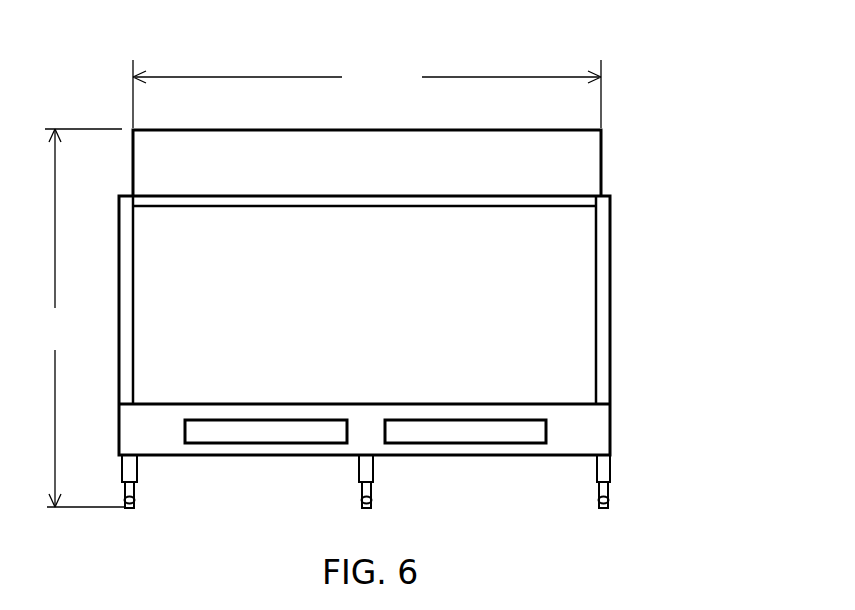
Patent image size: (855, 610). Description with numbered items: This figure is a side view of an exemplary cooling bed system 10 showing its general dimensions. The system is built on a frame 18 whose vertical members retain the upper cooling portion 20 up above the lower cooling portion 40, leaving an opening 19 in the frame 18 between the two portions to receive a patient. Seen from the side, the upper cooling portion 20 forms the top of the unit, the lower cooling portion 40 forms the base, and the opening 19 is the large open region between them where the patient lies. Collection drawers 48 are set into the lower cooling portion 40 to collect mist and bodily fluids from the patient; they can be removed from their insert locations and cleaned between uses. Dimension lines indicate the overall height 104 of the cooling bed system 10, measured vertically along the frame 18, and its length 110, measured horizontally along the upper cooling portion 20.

The cooling bed system 10 is at (610, 135).
The frame 18 is at (598, 291).
The opening 19 is at (517, 345).
The upper cooling portion 20 is at (582, 168).
The lower cooling portion 40 is at (598, 422).
The collection drawer 48 is at (455, 430).
The height 104 is at (81, 318).
The length 110 is at (367, 94).